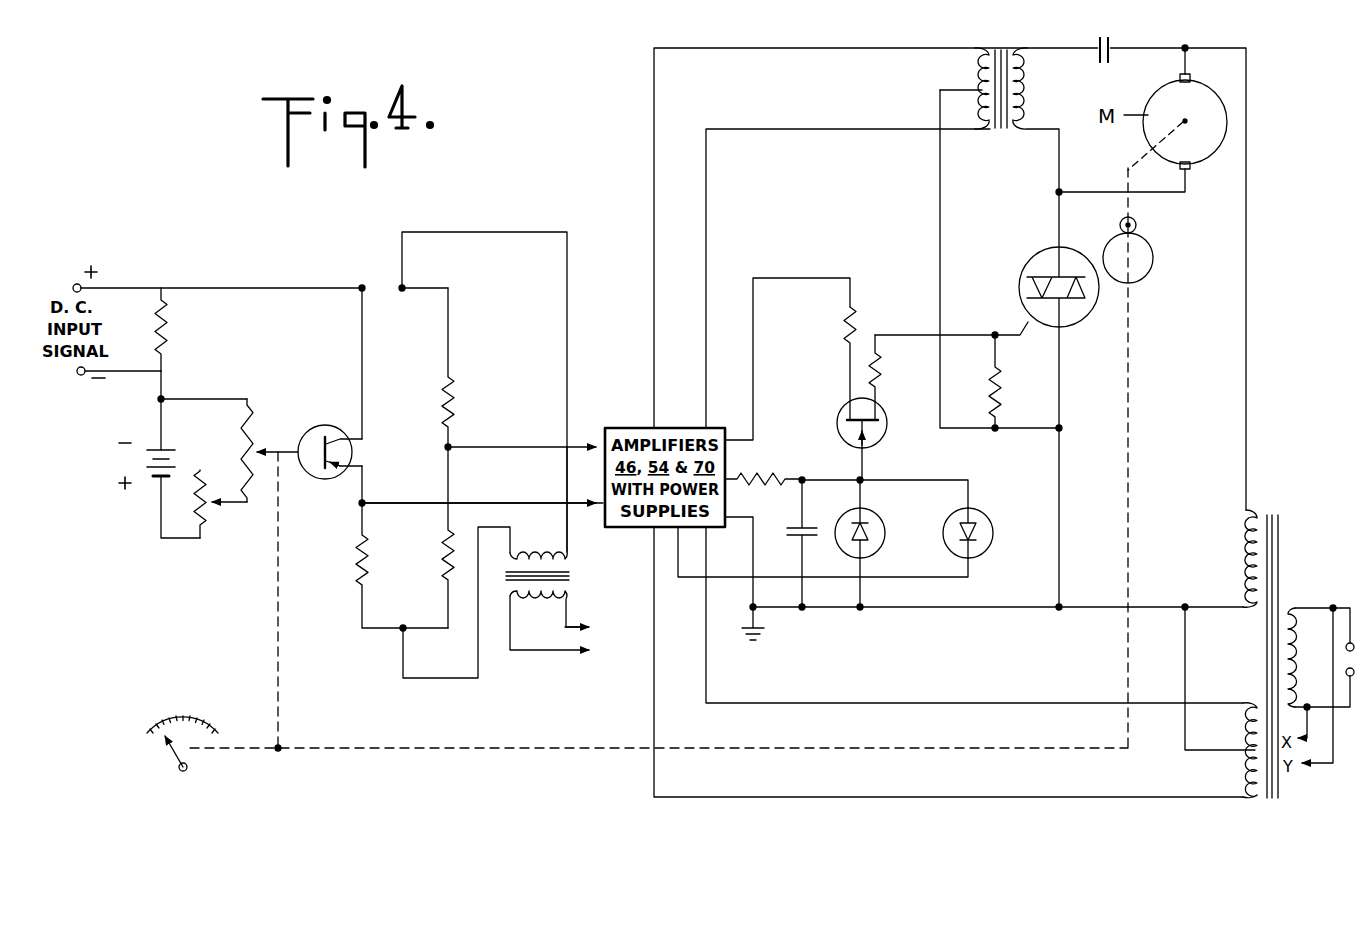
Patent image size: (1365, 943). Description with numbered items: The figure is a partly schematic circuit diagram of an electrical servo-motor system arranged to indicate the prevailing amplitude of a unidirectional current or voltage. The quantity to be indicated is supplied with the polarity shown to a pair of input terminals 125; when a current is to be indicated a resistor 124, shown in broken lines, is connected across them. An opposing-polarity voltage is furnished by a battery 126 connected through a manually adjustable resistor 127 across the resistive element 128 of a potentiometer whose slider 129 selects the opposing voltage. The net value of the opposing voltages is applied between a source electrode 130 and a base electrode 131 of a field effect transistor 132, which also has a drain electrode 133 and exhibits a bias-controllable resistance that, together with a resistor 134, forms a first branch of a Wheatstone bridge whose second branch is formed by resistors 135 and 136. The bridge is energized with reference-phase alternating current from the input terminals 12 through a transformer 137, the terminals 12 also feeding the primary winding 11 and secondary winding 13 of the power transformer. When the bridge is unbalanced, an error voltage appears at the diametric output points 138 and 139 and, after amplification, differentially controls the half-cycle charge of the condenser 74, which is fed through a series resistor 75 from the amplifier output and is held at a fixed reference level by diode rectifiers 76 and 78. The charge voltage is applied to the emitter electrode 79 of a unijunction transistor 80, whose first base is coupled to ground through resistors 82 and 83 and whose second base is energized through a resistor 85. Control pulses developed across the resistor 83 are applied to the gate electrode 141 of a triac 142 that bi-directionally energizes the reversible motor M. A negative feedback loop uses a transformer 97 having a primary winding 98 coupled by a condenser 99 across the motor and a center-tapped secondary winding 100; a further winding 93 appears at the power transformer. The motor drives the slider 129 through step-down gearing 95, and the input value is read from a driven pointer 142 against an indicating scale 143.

The primary winding 11 is at (1303, 637).
The input terminals 12 is at (1352, 680).
The secondary winding 13 is at (1240, 771).
The condenser 74 is at (790, 533).
The resistor 75 is at (760, 474).
The diode rectifier 76 is at (992, 546).
The diode rectifier 78 is at (885, 544).
The emitter electrode 79 is at (878, 441).
The unijunction transistor 80 is at (886, 418).
The resistor 82 is at (882, 366).
The resistor 83 is at (1003, 383).
The resistor 85 is at (845, 323).
The transformer winding 93 is at (1240, 558).
The step-down gearing 95 is at (1150, 245).
The transformer 97 is at (1001, 135).
The primary winding 98 is at (1034, 88).
The condenser 99 is at (1108, 36).
The secondary winding 100 is at (972, 66).
The resistor 124 is at (167, 322).
The input terminals 125 is at (77, 284).
The battery 126 is at (145, 460).
The manually adjustable resistor 127 is at (206, 518).
The resistive element 128 is at (252, 410).
The slider 129 is at (262, 448).
The source electrode 130 is at (331, 426).
The base electrode 131 is at (309, 476).
The field effect transistor 132 is at (355, 452).
The drain electrode 133 is at (329, 480).
The resistor 134 is at (354, 560).
The resistor 135 is at (452, 389).
The resistor 136 is at (440, 560).
The transformer 137 is at (571, 576).
The bridge output point 138 is at (364, 502).
The bridge output point 139 is at (445, 447).
The gate electrode 141 is at (1025, 325).
The gate controlled alternating current switch device 142 is at (1026, 256).
The indicating scale 143 is at (184, 714).